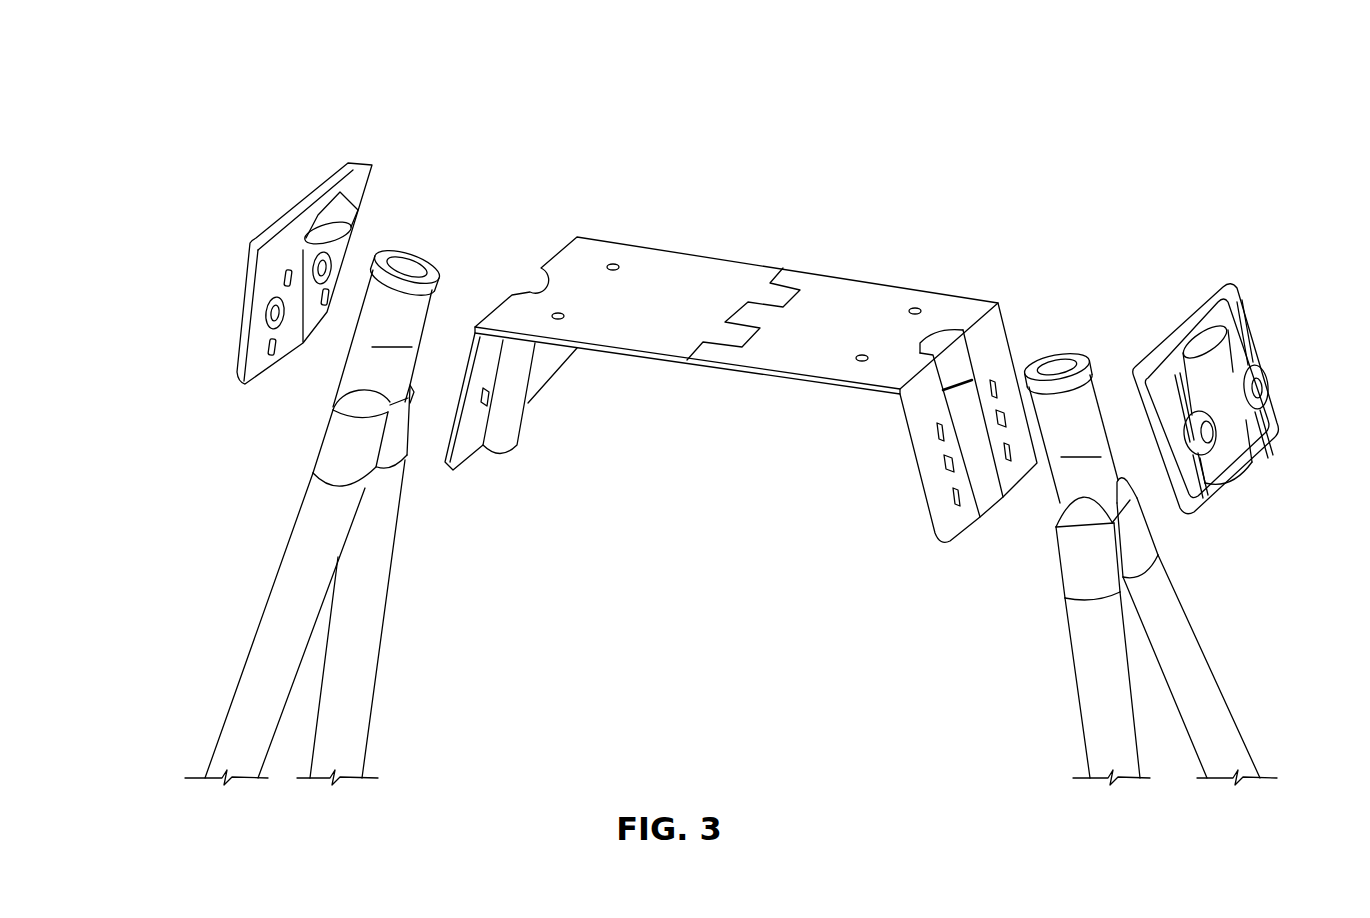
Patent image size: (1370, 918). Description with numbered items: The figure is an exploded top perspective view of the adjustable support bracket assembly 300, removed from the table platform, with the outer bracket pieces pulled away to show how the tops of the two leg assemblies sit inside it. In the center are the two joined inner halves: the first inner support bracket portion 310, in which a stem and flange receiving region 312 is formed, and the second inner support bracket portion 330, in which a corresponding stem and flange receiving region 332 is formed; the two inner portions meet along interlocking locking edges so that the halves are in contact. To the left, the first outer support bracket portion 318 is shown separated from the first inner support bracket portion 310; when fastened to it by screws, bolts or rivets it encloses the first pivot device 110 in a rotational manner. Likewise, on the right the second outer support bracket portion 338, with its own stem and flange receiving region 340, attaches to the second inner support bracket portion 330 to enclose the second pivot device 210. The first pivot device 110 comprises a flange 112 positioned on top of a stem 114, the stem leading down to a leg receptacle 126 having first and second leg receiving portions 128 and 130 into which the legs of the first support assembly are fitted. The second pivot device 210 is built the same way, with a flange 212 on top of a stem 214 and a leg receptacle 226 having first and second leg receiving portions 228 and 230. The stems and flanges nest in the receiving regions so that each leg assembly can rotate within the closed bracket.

The adjustable support bracket assembly 300 is at (515, 181).
The first inner support bracket portion 310 is at (324, 390).
The stem and flange receiving region 312 is at (517, 448).
The first outer support bracket portion 318 is at (310, 193).
The second inner support bracket portion 330 is at (892, 422).
The stem and flange receiving region 332 is at (962, 440).
The second outer support bracket portion 338 is at (1205, 297).
The stem and flange receiving region 340 is at (1238, 342).
The first pivot device 110 is at (314, 394).
The flange 112 is at (412, 258).
The stem 114 is at (382, 338).
The leg receptacle 126 is at (414, 401).
The first leg receiving portion 128 is at (406, 458).
The second leg receiving portion 130 is at (313, 475).
The second pivot device 210 is at (1045, 505).
The flange 212 is at (1083, 350).
The stem 214 is at (1073, 439).
The leg receptacle 226 is at (1148, 523).
The first leg receiving portion 228 is at (1066, 600).
The second leg receiving portion 230 is at (1143, 575).